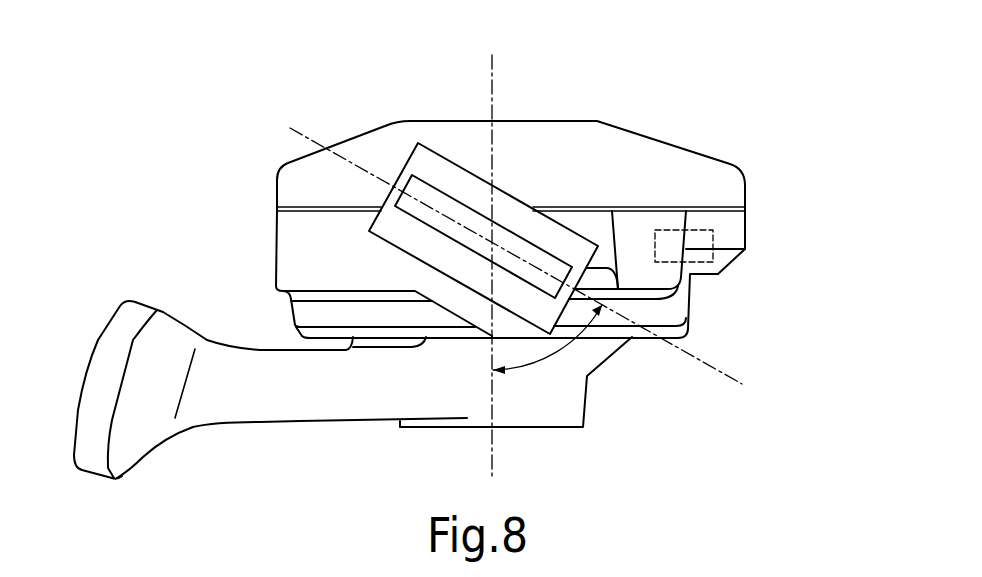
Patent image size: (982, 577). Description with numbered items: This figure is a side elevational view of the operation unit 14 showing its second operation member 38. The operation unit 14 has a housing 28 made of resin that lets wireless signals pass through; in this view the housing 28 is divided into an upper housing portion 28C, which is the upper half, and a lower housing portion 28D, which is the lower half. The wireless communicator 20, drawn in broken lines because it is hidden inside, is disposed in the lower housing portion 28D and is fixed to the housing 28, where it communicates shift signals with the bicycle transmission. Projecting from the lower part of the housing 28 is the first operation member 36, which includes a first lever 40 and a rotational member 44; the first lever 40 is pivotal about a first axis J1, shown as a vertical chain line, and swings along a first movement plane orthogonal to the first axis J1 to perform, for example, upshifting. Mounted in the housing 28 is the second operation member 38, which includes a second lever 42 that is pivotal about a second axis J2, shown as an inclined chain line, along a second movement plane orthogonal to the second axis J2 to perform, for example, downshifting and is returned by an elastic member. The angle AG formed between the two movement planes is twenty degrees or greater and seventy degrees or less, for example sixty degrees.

The operation unit 14 is at (316, 58).
The wireless communicator 20 is at (703, 273).
The housing 28 is at (826, 168).
The upper housing portion 28C is at (723, 185).
The lower housing portion 28D is at (723, 238).
The first operation member 36 is at (113, 294).
The second operation member 38 is at (443, 149).
The first lever 40 is at (265, 410).
The second lever 42 is at (522, 245).
The rotational member 44 is at (572, 405).
The first axis J1 is at (489, 284).
The second axis J2 is at (530, 268).
The angle AG is at (547, 345).